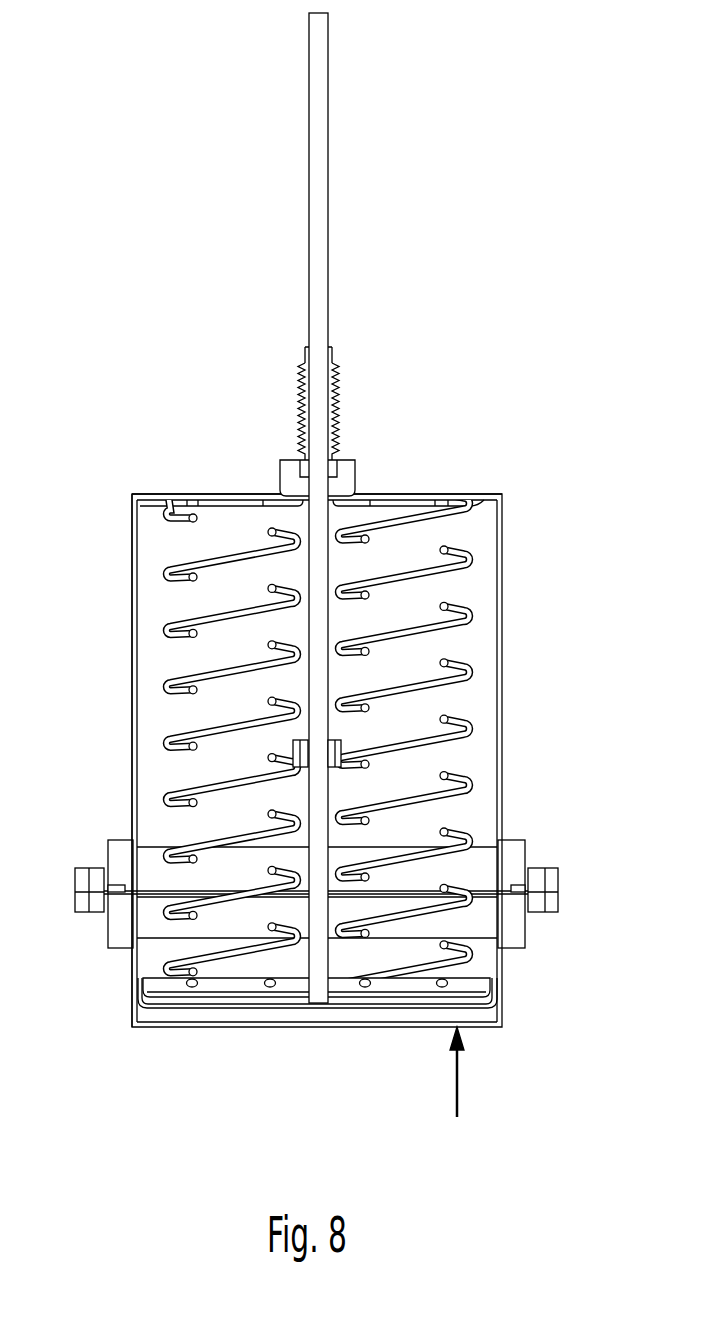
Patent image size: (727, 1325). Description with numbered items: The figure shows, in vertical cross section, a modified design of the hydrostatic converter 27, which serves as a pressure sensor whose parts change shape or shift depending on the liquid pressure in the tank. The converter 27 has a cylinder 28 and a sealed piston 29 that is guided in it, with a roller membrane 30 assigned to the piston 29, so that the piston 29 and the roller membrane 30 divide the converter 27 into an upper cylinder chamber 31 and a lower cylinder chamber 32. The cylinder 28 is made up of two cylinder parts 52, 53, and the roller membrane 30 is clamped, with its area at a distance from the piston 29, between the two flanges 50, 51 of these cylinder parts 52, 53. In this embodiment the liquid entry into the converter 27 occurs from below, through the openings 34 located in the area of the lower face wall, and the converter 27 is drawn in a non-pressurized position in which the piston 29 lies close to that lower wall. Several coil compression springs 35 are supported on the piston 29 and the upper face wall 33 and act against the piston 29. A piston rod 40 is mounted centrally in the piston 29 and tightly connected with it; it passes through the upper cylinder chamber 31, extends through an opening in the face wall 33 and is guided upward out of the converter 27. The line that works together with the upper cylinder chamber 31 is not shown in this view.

The hydrostatic converter 27 is at (262, 477).
The cylinder 28 is at (540, 698).
The piston 29 is at (216, 993).
The roller membrane 30 is at (143, 999).
The upper cylinder chamber 31 is at (476, 538).
The lower cylinder chamber 32 is at (487, 1014).
The upper face wall 33 is at (415, 494).
The openings 34 is at (456, 1090).
The coil compression springs 35 is at (168, 572).
The piston rod 40 is at (320, 125).
The flange 50 is at (123, 872).
The flange 51 is at (120, 928).
The cylinder part 52 is at (118, 634).
The cylinder part 53 is at (121, 971).